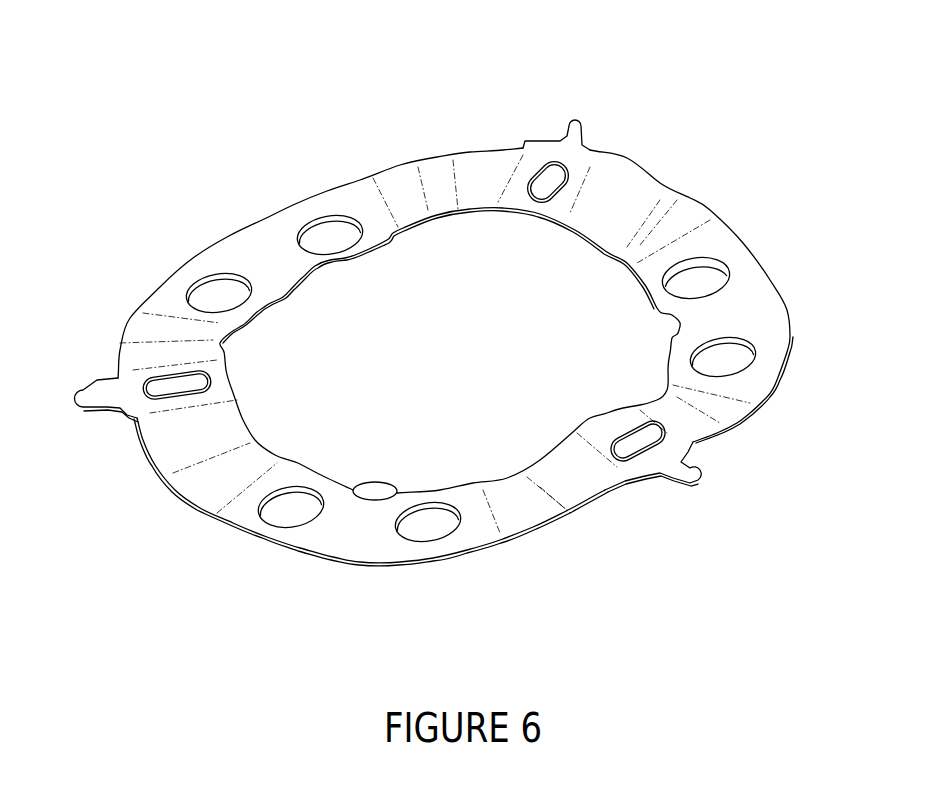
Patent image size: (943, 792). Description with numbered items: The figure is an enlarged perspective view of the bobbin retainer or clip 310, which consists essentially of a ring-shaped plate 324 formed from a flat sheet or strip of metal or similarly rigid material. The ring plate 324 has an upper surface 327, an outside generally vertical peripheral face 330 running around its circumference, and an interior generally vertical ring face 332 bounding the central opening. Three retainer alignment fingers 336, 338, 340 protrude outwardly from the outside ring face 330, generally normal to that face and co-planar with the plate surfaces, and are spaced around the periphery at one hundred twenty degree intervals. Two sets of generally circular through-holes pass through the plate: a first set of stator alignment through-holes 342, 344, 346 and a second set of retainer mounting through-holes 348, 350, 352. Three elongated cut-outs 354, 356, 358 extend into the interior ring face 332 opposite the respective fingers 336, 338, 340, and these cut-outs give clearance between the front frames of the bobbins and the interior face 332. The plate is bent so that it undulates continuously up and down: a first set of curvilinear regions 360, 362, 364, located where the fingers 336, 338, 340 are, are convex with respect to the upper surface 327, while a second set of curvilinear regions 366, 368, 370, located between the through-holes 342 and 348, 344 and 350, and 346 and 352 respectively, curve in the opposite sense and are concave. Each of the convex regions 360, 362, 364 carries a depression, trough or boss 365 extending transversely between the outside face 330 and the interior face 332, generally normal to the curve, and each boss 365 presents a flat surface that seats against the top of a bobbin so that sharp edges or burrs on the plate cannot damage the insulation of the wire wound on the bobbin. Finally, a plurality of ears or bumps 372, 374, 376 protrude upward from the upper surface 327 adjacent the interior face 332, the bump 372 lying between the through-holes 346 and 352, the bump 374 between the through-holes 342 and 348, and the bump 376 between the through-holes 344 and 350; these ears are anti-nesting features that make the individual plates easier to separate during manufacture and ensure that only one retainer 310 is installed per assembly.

The bobbin retainer 310 is at (391, 122).
The ring-shaped plate 324 is at (680, 194).
The upper surface 327 is at (742, 308).
The outside peripheral face 330 is at (220, 530).
The interior ring face 332 is at (307, 463).
The retainer alignment finger 336 is at (80, 394).
The retainer alignment finger 338 is at (573, 118).
The retainer alignment finger 340 is at (712, 483).
The stator alignment through-hole 342 is at (188, 294).
The stator alignment through-hole 344 is at (707, 258).
The stator alignment through-hole 346 is at (455, 542).
The retainer mounting through-hole 348 is at (300, 225).
The retainer mounting through-hole 350 is at (787, 340).
The retainer mounting through-hole 352 is at (273, 527).
The elongated cut-out 354 is at (240, 395).
The elongated cut-out 356 is at (533, 212).
The elongated cut-out 358 is at (565, 437).
The curvilinear region 360 is at (222, 383).
The curvilinear region 362 is at (597, 187).
The curvilinear region 364 is at (700, 410).
The boss 365 is at (565, 178).
The curvilinear region 366 is at (237, 253).
The curvilinear region 368 is at (738, 297).
The curvilinear region 370 is at (358, 538).
The ear 372 is at (380, 480).
The ear 374 is at (348, 266).
The ear 376 is at (665, 328).